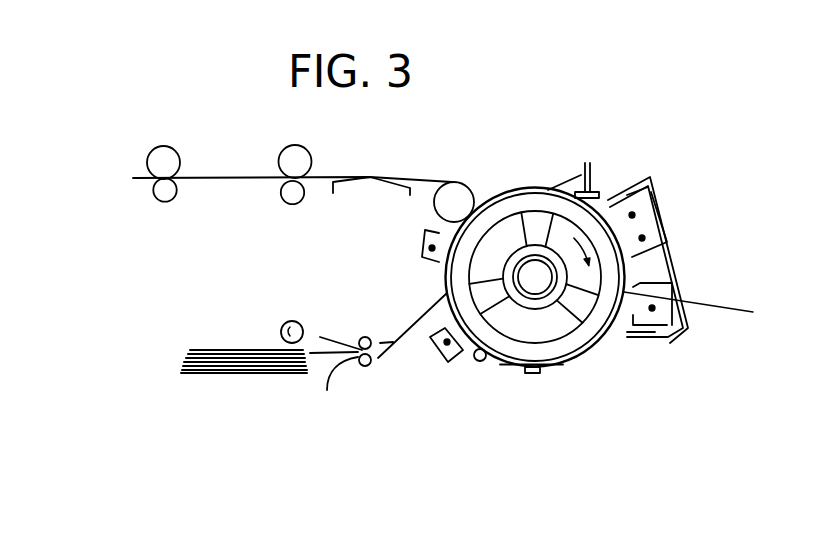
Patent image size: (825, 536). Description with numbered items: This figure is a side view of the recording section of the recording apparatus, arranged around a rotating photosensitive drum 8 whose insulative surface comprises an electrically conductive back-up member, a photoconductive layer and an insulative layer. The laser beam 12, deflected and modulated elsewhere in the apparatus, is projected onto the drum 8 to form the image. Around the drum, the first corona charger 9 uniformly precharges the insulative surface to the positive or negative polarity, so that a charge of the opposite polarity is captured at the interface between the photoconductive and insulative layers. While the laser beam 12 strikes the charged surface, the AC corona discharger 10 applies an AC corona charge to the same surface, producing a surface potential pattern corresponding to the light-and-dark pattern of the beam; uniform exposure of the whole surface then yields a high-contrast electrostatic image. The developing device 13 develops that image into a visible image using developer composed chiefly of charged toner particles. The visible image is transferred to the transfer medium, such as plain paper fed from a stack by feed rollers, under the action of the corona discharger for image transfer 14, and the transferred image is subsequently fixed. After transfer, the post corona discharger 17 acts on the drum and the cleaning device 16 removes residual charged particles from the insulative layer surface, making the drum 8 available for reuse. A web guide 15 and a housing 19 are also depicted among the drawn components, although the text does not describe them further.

The photosensitive drum 8 is at (507, 193).
The first corona charger 9 is at (655, 198).
The AC corona discharger 10 is at (650, 336).
The laser beam 12 is at (722, 303).
The developing device 13 is at (553, 370).
The corona discharger for image transfer 14 is at (424, 247).
The web guide 15 is at (360, 177).
The cleaning device 16 is at (573, 177).
The post corona discharger 17 is at (455, 362).
The housing 19 is at (616, 187).